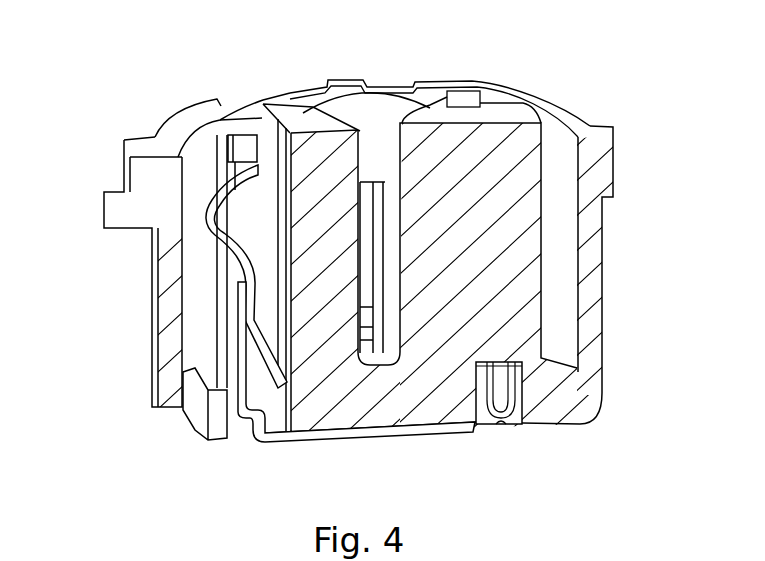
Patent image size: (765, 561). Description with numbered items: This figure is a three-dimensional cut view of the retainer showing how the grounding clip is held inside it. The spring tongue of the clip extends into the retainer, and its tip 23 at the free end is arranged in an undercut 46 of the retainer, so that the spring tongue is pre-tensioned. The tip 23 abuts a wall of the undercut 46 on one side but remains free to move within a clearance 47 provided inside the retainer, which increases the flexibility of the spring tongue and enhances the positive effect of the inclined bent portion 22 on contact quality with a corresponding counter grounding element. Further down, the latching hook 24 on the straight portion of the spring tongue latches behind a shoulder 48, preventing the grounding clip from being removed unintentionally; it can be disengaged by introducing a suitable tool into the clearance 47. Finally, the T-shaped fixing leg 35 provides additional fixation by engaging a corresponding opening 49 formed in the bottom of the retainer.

The bent portion 22 is at (197, 205).
The tip 23 is at (240, 140).
The latching hook 24 is at (253, 343).
The fixing leg 35 is at (523, 380).
The undercut 46 is at (230, 112).
The clearance 47 is at (292, 93).
The shoulder 48 is at (256, 434).
The opening 49 is at (503, 420).